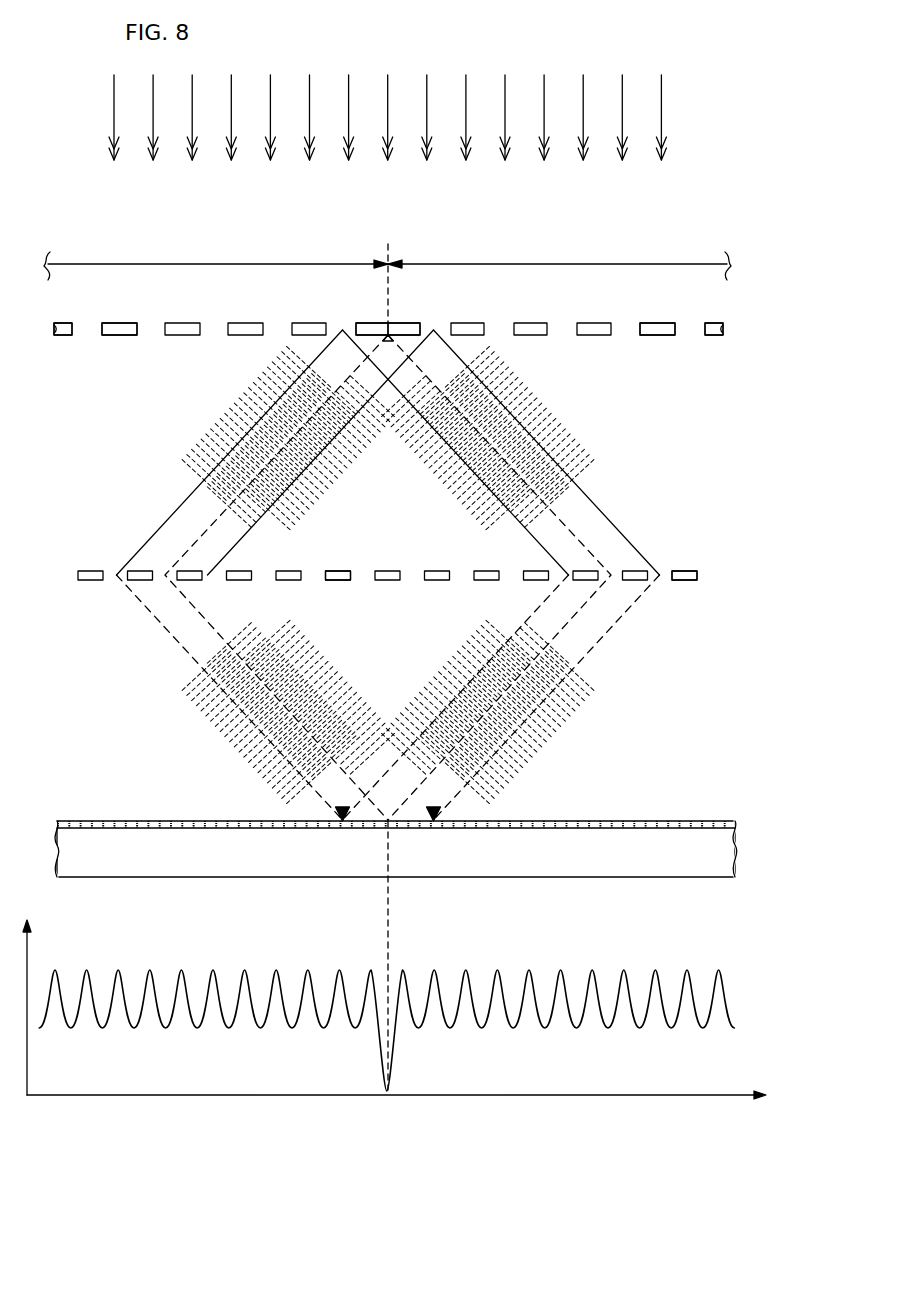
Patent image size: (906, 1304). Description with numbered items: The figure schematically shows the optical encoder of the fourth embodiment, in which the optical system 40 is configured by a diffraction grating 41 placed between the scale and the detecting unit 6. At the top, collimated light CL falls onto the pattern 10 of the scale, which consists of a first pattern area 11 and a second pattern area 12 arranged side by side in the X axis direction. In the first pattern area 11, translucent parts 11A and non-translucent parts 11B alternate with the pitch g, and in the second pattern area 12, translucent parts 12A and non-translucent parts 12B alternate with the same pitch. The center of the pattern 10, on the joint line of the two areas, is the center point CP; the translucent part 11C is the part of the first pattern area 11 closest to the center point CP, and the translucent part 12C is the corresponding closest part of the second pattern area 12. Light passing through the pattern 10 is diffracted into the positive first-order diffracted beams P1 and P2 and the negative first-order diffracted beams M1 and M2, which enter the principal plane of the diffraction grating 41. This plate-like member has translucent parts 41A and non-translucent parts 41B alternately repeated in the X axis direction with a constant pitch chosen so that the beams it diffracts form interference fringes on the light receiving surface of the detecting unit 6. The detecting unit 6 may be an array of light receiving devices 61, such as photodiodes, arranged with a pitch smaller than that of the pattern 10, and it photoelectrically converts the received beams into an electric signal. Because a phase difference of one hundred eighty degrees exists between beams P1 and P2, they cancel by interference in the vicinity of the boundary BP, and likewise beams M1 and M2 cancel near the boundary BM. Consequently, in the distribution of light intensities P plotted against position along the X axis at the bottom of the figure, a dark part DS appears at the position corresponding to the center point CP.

The collimated light CL is at (687, 113).
The second pattern area 12 is at (105, 263).
The first pattern area 11 is at (663, 263).
The center point CP is at (389, 653).
The pattern 10 is at (732, 328).
The translucent part 12A is at (82, 336).
The non-translucent part 12B is at (118, 337).
The translucent part 12C is at (337, 323).
The translucent part 11C is at (440, 323).
The non-translucent part 11B is at (660, 340).
The translucent part 11A is at (690, 340).
The negative s-th-order diffracted beam M2 is at (170, 510).
The negative s-th-order diffracted beam M1 is at (256, 528).
The positive s-th-order diffracted beam P2 is at (512, 530).
The positive s-th-order diffracted beam P1 is at (603, 508).
The boundary BM is at (182, 553).
The boundary BP is at (598, 555).
The diffraction grating 41 is at (707, 572).
The translucent part 41A is at (352, 582).
The non-translucent part 41B is at (678, 582).
The optical system 40 is at (105, 630).
The light receiving device 61 is at (716, 819).
The detecting unit 6 is at (742, 853).
The dark part DS is at (386, 1048).
The light intensities P is at (25, 997).
The X axis X is at (407, 1096).